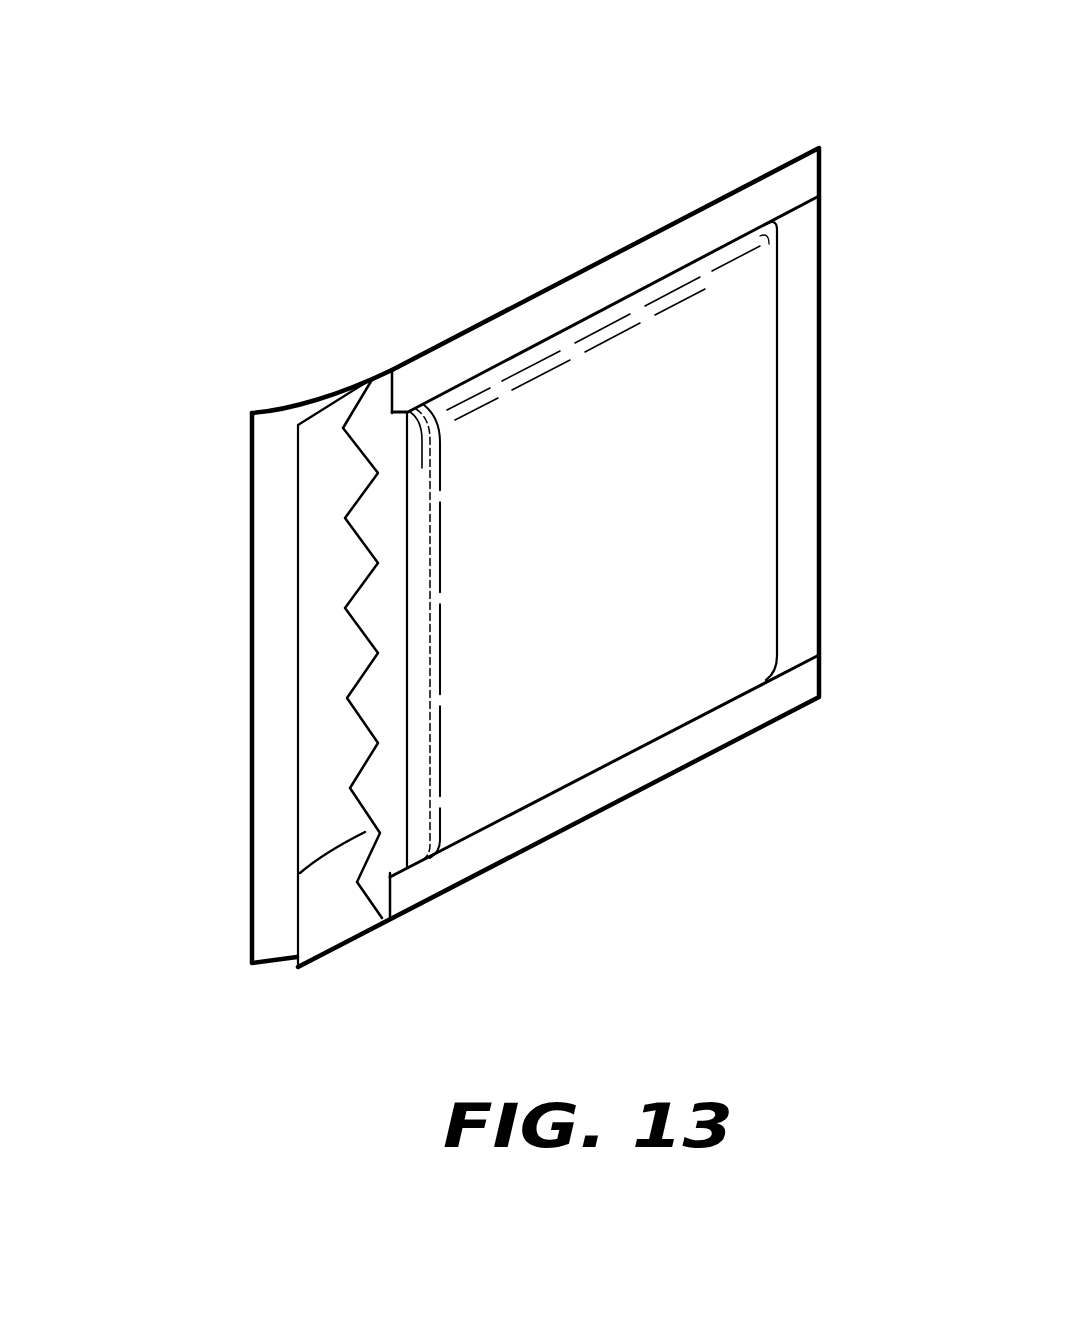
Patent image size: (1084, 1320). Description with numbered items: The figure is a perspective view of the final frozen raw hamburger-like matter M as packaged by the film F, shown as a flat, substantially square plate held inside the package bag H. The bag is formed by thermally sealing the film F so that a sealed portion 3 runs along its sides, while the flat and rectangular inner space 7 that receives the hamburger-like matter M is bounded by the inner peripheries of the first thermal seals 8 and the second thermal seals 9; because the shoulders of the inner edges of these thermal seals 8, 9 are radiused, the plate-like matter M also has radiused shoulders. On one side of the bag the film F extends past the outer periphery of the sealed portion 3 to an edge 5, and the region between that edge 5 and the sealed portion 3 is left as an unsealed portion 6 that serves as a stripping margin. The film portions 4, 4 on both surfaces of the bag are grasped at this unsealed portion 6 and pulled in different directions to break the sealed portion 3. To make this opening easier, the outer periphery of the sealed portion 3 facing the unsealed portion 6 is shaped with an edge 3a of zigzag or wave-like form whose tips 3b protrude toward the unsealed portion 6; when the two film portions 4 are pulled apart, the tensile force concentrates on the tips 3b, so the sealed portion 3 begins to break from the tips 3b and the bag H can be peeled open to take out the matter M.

The sealed portion 3 is at (628, 263).
The edge 3a is at (377, 826).
The tip 3b is at (345, 518).
The film portion 4 is at (743, 632).
The edge 5 is at (252, 654).
The unsealed portion 6 is at (318, 562).
The inner space 7 is at (727, 326).
The first thermal seal 8 is at (803, 398).
The second thermal seal 9 is at (573, 293).
The film F is at (670, 707).
The raw hamburger-like matter M is at (727, 572).
The package bag H is at (812, 114).